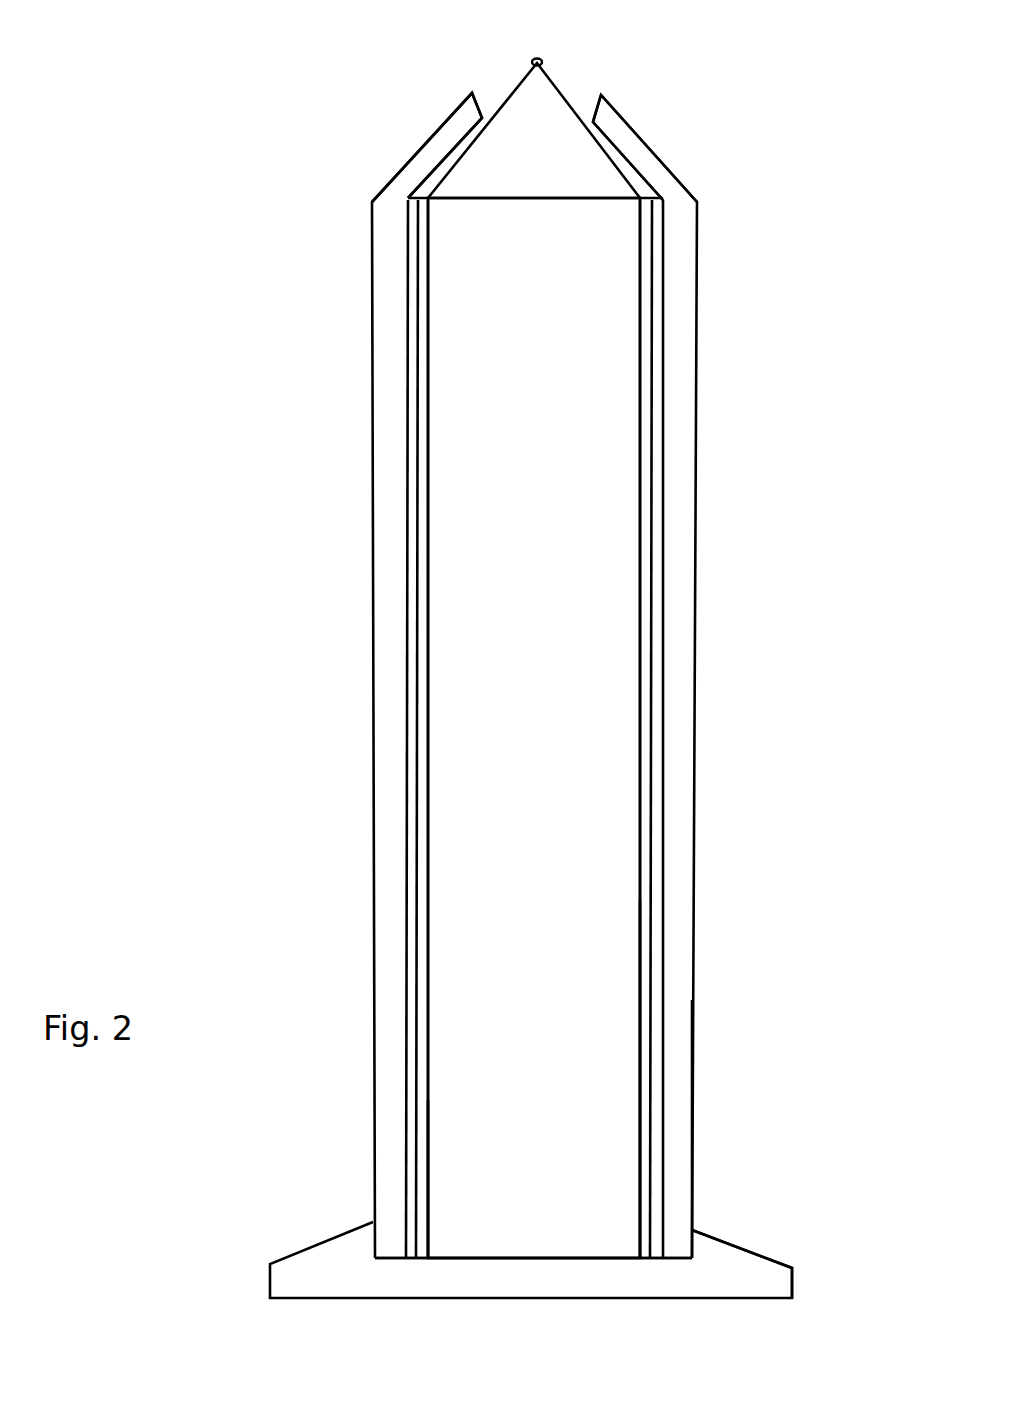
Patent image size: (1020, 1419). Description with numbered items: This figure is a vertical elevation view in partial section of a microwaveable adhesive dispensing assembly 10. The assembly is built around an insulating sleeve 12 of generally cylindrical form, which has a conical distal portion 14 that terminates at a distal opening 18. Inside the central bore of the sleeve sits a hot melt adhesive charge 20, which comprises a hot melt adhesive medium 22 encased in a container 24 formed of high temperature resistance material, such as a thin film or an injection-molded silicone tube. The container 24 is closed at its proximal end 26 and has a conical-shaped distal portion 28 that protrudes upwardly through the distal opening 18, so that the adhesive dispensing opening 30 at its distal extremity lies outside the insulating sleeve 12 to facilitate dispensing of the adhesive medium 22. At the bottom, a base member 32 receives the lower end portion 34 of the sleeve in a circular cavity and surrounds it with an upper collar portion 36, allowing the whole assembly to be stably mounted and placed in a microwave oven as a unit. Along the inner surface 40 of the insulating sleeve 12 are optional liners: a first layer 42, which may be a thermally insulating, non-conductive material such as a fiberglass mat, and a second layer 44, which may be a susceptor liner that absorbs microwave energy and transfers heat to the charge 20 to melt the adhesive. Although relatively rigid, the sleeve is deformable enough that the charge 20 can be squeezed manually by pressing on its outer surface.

The dispensing assembly 10 is at (722, 468).
The insulating sleeve 12 is at (682, 833).
The conical distal portion 14 is at (650, 170).
The distal opening 18 is at (482, 102).
The hot melt adhesive charge 20 is at (640, 375).
The hot melt adhesive medium 22 is at (558, 692).
The container 24 is at (453, 1188).
The proximal end 26 is at (470, 1260).
The conical-shaped distal portion 28 is at (550, 103).
The adhesive dispensing opening 30 is at (538, 58).
The base member 32 is at (607, 1280).
The lower end portion 34 is at (677, 1153).
The upper collar portion 36 is at (730, 1260).
The inner surface 40 is at (662, 574).
The first layer 42 is at (655, 958).
The second layer 44 is at (643, 1048).